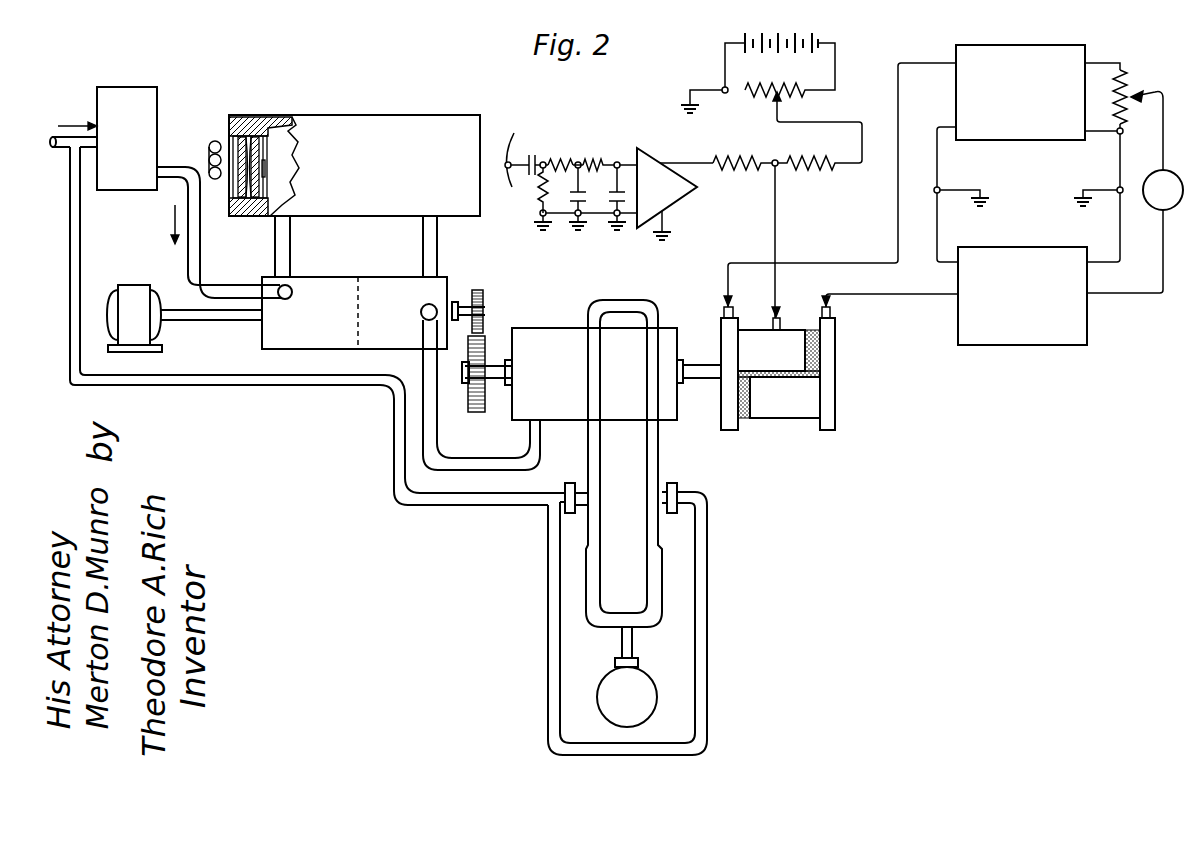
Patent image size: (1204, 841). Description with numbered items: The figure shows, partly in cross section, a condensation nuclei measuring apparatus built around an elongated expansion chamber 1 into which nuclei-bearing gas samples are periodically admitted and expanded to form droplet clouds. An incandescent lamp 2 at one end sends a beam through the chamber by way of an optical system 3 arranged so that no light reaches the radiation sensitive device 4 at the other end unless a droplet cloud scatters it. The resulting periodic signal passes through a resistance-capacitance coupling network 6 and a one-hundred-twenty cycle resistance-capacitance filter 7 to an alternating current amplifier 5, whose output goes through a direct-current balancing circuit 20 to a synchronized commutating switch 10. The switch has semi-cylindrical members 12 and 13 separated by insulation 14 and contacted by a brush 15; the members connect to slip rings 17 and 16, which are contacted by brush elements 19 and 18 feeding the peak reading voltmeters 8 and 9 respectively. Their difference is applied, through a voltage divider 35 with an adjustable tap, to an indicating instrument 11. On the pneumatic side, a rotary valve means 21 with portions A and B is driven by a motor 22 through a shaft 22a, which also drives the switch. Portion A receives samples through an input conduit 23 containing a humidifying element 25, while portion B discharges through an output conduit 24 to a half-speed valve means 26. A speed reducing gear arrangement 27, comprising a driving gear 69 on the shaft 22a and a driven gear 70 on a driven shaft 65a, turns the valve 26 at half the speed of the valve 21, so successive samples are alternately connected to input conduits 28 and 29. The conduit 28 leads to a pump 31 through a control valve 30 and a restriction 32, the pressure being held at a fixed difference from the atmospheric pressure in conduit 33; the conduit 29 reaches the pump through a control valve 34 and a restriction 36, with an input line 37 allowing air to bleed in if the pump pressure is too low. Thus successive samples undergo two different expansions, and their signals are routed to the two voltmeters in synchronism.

The expansion chamber 1 is at (366, 115).
The incandescent lamp 2 is at (212, 141).
The optical system 3 is at (245, 136).
The radiation sensitive device 4 is at (512, 139).
The alternating current amplifier 5 is at (667, 198).
The resistance-capacitance coupling network 6 is at (526, 203).
The 120 cycle resistance-capacitance filter 7 is at (578, 163).
The peak reading voltmeter 8 is at (1028, 48).
The peak reading voltmeter 9 is at (1025, 346).
The synchronized commutating switch means 10 is at (824, 263).
The indicating instrument 11 is at (1175, 172).
The semi-cylindrical member 12 is at (771, 350).
The semi-cylindrical member 13 is at (785, 397).
The insulation 14 is at (741, 420).
The brush 15 is at (784, 318).
The slip ring 16 is at (836, 391).
The slip ring 17 is at (737, 322).
The brush element 18 is at (831, 314).
The brush element 19 is at (724, 309).
The direct-current balancing circuit 20 is at (758, 129).
The valve means 21 is at (372, 265).
The motor 22 is at (134, 287).
The shaft 22a is at (206, 320).
The input conduit 23 is at (200, 262).
The output conduit 24 is at (437, 246).
The humidifying element 25 is at (120, 87).
The half-speed valve means 26 is at (568, 316).
The speed reducing gear arrangement 27 is at (488, 318).
The input conduit 28 is at (618, 300).
The input conduit 29 is at (660, 445).
The control valve 30 is at (568, 483).
The pump 31 is at (648, 680).
The restriction 32 is at (601, 530).
The conduit 33 is at (478, 505).
The control valve 34 is at (677, 486).
The voltage divider 35 is at (1133, 83).
The restriction 36 is at (659, 530).
The input line 37 is at (707, 600).
The driven shaft 65a is at (497, 372).
The driving gear 69 is at (475, 290).
The driven gear 70 is at (469, 400).